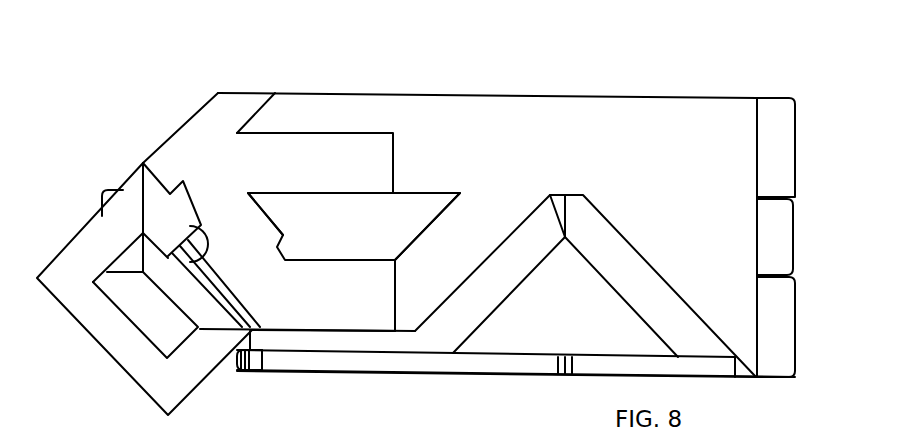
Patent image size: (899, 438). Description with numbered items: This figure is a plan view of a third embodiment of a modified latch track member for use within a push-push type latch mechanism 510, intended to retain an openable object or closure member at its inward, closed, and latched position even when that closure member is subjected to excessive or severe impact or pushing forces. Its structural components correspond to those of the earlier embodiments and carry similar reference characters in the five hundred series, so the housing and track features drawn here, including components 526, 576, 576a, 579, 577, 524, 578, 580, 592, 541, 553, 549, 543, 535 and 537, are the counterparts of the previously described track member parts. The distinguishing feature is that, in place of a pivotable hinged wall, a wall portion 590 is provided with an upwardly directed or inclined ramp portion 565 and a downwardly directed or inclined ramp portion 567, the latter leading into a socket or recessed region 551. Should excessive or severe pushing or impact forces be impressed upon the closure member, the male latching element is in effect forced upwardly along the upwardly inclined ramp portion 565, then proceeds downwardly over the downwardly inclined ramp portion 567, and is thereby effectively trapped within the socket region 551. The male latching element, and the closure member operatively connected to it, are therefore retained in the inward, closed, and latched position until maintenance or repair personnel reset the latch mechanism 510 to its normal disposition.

The latch mechanism 510 is at (650, 65).
The connector housing 526 is at (705, 98).
The top face 576 is at (408, 115).
The top surface 576a is at (632, 166).
The beveled edge 579 is at (228, 147).
The latch projection 577 is at (180, 203).
The key block 524 is at (420, 192).
The notch 578 is at (282, 235).
The ramp surface 580 is at (414, 207).
The upwardly inclined ramp portion 565 is at (213, 279).
The downwardly inclined ramp portion 567 is at (226, 287).
The guide rail 592 is at (203, 277).
The socket or recessed region 551 is at (165, 327).
The wall portion 590 is at (238, 306).
The side wall 541 is at (377, 318).
The bottom face 553 is at (353, 340).
The base strip 549 is at (480, 363).
The polarizing key 543 is at (618, 257).
The end block 535 is at (785, 168).
The center block 537 is at (780, 260).